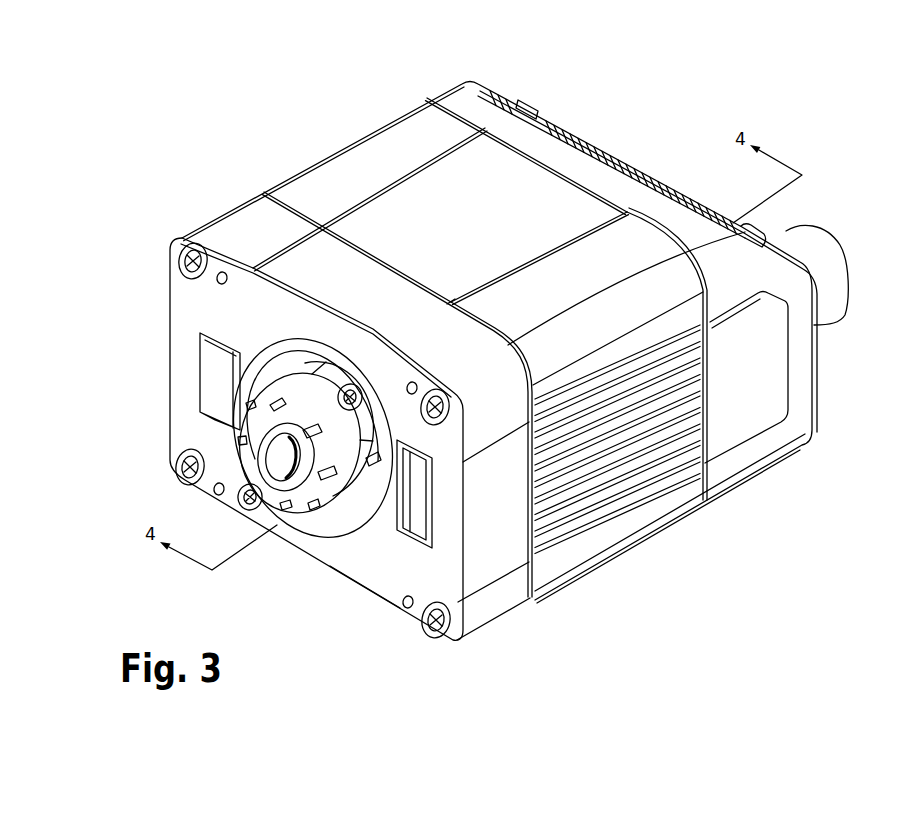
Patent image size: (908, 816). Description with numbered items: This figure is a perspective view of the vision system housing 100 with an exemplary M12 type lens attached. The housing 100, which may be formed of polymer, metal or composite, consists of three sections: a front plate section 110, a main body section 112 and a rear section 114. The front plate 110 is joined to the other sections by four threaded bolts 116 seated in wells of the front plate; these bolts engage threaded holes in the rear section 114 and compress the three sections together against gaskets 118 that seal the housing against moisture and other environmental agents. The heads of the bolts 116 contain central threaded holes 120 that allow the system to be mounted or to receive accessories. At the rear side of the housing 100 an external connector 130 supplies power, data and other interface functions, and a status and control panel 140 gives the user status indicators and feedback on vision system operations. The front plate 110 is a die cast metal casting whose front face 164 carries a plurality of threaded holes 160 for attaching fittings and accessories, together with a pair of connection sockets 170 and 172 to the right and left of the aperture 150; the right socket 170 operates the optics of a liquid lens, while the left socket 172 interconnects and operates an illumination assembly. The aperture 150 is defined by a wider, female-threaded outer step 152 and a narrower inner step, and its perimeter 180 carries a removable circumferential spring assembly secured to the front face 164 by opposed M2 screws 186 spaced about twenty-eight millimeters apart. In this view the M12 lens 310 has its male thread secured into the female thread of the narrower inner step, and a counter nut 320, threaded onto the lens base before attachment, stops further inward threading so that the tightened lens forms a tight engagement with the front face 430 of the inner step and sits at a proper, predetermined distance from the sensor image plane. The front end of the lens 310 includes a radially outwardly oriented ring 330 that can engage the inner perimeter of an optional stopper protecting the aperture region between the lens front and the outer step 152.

The housing 100 is at (327, 178).
The front plate section 110 is at (239, 218).
The main body section 112 is at (404, 134).
The rear section 114 is at (473, 108).
The threaded bolts 116 is at (180, 256).
The gaskets 118 is at (702, 506).
The central threaded holes 120 is at (181, 275).
The external connector 130 is at (805, 237).
The external status and control panel 140 is at (664, 167).
The aperture 150 is at (333, 512).
The outer step 152 is at (278, 362).
The threaded holes 160 is at (217, 284).
The front face 164 is at (370, 586).
The right connection socket 170 is at (413, 513).
The left connection socket 172 is at (205, 376).
The perimeter of the aperture 180 is at (313, 353).
The screws 186 is at (243, 510).
The M12 lens 310 is at (294, 505).
The counter nut 320 is at (452, 300).
The radially outwardly oriented ring 330 is at (276, 402).
The front face of the inner step 430 is at (365, 501).